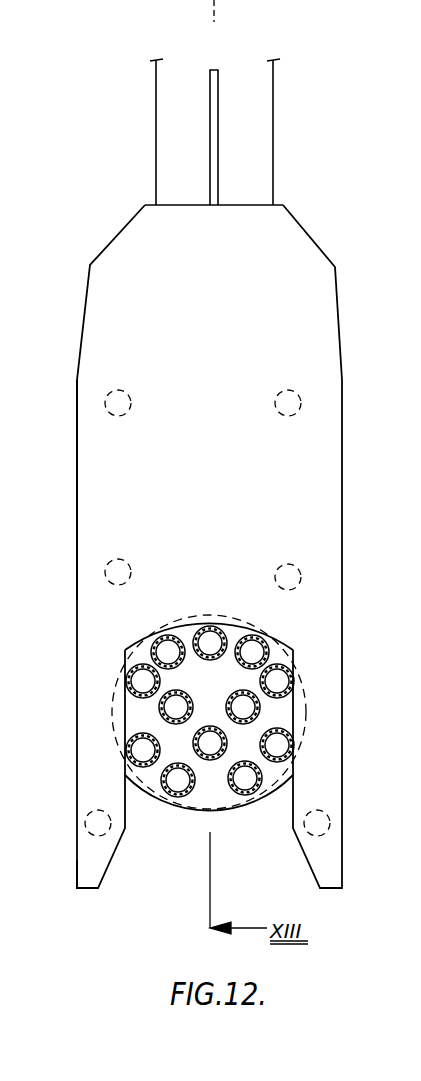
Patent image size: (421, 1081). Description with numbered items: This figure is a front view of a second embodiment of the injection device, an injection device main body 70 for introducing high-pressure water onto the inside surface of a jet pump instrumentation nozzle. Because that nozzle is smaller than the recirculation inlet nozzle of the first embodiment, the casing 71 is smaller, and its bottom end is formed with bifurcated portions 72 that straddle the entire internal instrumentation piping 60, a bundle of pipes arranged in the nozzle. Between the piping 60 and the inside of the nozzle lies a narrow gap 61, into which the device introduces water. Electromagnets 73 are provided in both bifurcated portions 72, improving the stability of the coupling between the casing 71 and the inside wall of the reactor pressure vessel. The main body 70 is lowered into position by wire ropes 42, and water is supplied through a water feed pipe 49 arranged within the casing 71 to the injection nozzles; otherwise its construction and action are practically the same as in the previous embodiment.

The wire ropes 42 is at (156, 107).
The water feed pipe 49 is at (214, 144).
The internal instrumentation piping 60 is at (258, 786).
The gap 61 is at (215, 790).
The injection device main body 70 is at (76, 381).
The casing 71 is at (77, 476).
The bifurcated portions 72 is at (77, 862).
The electromagnets 73 is at (105, 575).